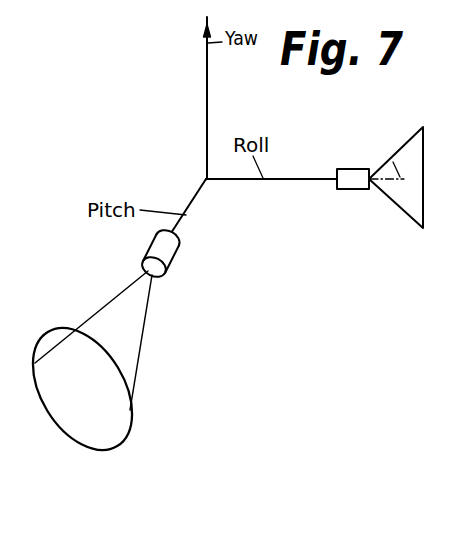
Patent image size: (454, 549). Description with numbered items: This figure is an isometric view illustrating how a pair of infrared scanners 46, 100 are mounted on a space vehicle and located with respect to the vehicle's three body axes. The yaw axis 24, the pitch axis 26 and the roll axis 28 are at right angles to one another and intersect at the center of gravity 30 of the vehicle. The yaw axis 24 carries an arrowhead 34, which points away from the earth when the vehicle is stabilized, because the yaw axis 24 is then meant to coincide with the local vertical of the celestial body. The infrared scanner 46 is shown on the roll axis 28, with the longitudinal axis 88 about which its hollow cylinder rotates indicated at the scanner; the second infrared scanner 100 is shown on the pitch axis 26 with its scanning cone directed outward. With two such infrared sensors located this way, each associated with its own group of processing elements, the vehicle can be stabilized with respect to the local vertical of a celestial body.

The yaw axis 24 is at (208, 93).
The pitch axis 26 is at (195, 200).
The roll axis 28 is at (288, 181).
The center of gravity 30 is at (204, 178).
The arrowhead 34 is at (205, 23).
The infrared scanner 46 is at (348, 183).
The longitudinal axis 88 is at (388, 160).
The infrared scanner 100 is at (166, 259).